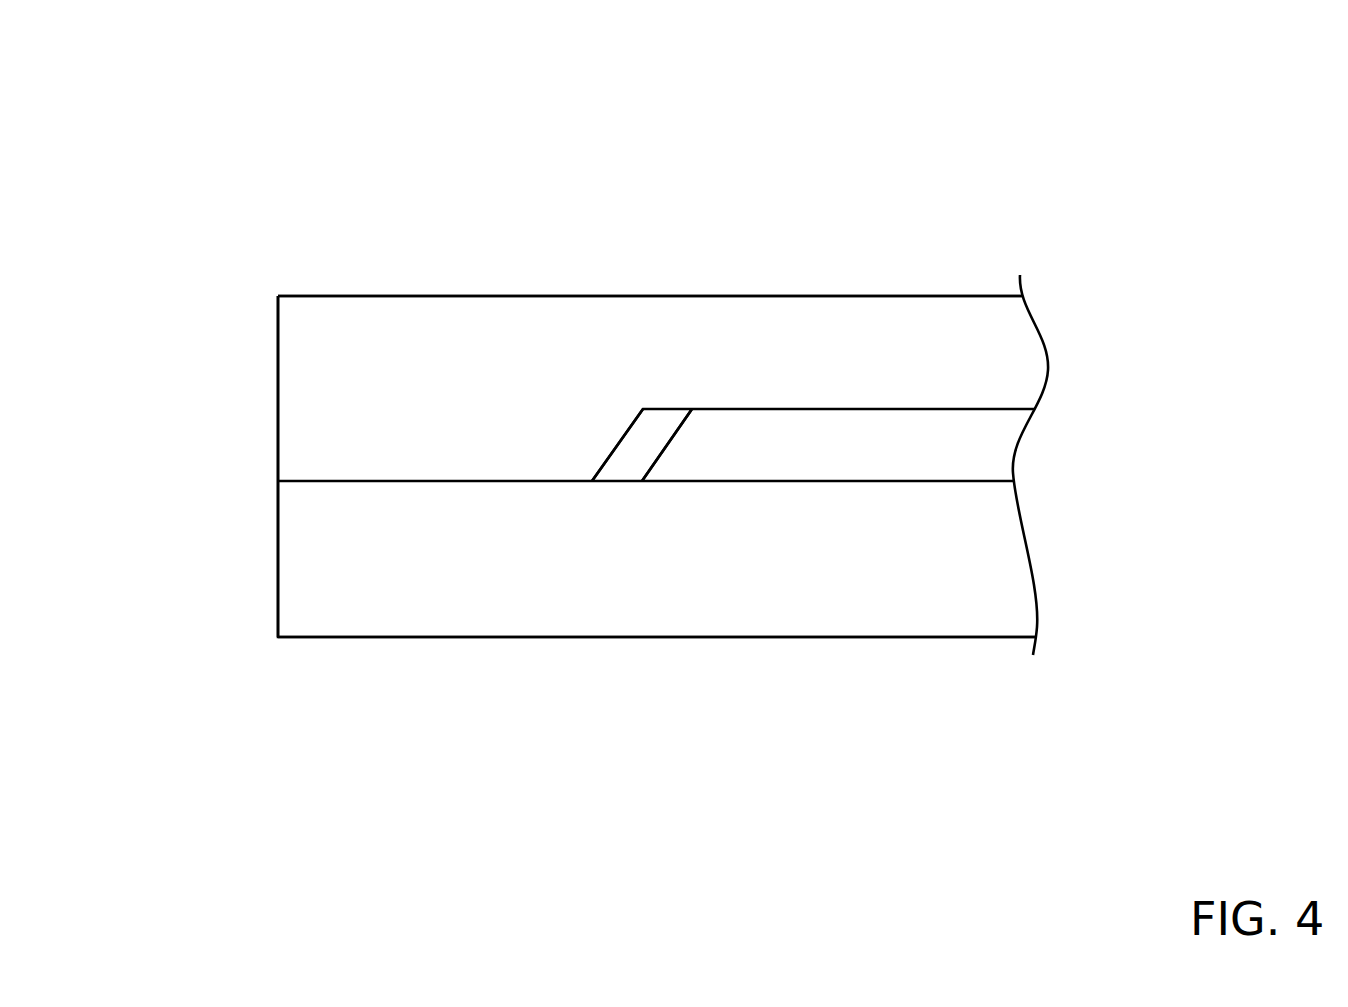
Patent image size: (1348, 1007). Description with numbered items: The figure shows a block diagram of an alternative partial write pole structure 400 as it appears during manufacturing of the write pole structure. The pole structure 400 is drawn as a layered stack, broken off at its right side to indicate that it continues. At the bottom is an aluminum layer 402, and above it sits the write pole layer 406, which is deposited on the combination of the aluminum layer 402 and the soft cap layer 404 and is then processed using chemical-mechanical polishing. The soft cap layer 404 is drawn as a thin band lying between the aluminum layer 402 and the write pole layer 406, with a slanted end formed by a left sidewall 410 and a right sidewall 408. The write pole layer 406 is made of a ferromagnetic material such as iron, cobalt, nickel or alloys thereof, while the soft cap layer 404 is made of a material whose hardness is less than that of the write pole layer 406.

The partial write pole structure 400 is at (128, 108).
The aluminum layer 402 is at (277, 582).
The soft cap layer 404 is at (633, 450).
The write pole layer 406 is at (277, 384).
The right sidewall of inclined region 408 is at (667, 448).
The left sidewall of inclined region 410 is at (627, 428).